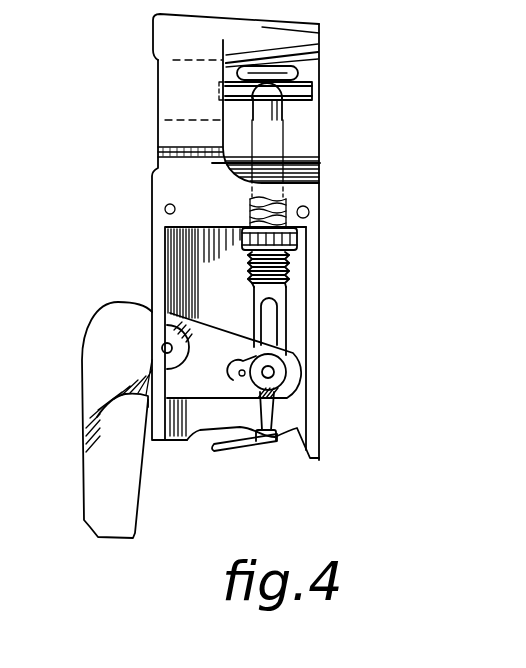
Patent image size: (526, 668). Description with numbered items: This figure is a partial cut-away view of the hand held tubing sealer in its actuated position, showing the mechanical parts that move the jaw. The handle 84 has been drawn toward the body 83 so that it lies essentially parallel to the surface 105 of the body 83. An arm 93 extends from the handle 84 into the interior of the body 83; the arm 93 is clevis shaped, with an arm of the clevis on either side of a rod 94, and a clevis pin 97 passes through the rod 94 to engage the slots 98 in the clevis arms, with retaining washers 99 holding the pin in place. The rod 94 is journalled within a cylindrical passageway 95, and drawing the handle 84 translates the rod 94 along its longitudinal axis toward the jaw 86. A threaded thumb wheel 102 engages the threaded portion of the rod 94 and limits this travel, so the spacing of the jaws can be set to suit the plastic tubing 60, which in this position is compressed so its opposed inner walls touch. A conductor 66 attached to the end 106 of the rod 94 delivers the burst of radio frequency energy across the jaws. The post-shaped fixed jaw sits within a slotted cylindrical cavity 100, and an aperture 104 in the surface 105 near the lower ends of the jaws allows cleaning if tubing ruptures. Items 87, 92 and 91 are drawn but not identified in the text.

The slotted cylindrical cavity 100 is at (320, 38).
The jaw 86 is at (320, 58).
The plastic tubing 60 is at (300, 70).
The valve block 87 is at (313, 97).
The aperture 104 is at (173, 60).
The surface 105 is at (158, 147).
The cylindrical passageway 95 is at (322, 163).
The rod 94 is at (275, 198).
The threaded thumb wheel 102 is at (298, 240).
The side plate 92 is at (152, 242).
The pivot pin 91 is at (162, 348).
The handle 84 is at (82, 365).
The retaining washers 99 is at (274, 372).
The clevis pin 97 is at (284, 378).
The body 83 is at (320, 413).
The end 106 is at (295, 430).
The arm 93 is at (197, 392).
The slots 98 is at (242, 382).
The conductor 66 is at (240, 442).